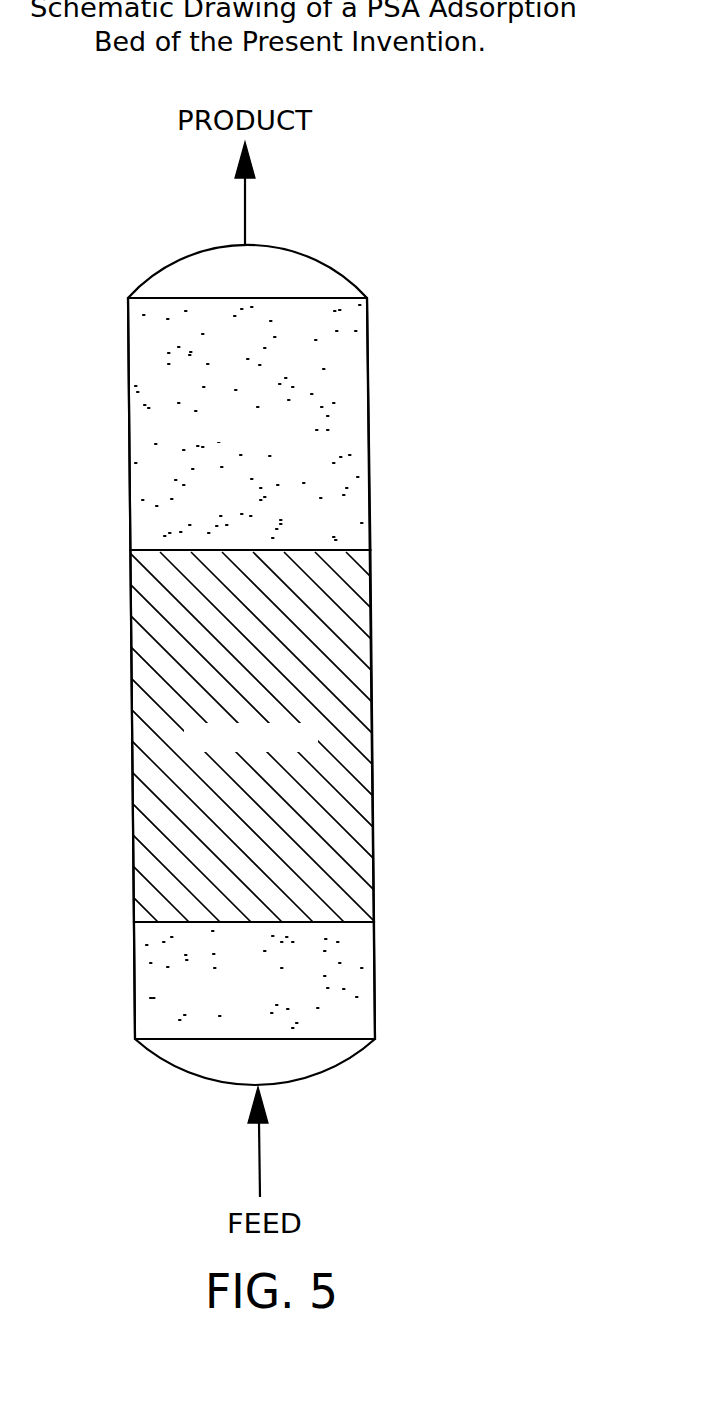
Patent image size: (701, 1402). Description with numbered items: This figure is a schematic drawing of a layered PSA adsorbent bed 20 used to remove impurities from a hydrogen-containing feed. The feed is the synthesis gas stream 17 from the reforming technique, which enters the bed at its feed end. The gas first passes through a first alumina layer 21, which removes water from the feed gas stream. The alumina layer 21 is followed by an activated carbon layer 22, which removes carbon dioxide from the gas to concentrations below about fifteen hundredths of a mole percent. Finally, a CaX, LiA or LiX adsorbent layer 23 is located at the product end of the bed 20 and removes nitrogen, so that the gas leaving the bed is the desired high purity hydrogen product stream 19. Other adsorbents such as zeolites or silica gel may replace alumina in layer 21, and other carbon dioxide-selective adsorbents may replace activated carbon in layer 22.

The synthesis gas stream 17 is at (276, 1142).
The high purity H2 product stream 19 is at (262, 193).
The adsorbent bed 20 is at (127, 255).
The first alumina layer 21 is at (333, 980).
The activated carbon layer 22 is at (350, 736).
The CaX, LiA or LiX adsorbent layer 23 is at (328, 424).